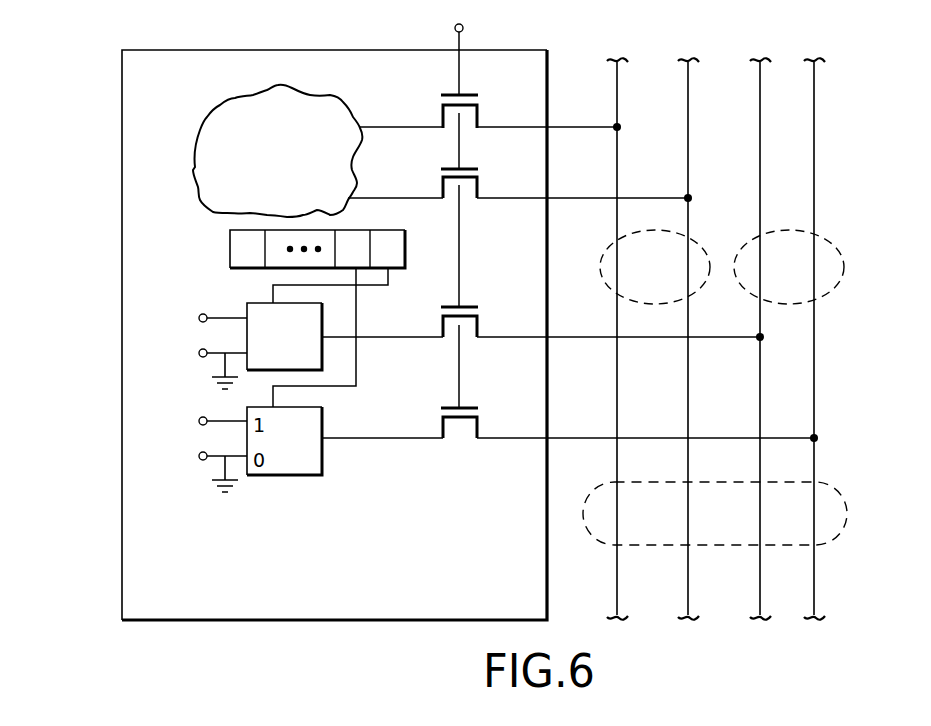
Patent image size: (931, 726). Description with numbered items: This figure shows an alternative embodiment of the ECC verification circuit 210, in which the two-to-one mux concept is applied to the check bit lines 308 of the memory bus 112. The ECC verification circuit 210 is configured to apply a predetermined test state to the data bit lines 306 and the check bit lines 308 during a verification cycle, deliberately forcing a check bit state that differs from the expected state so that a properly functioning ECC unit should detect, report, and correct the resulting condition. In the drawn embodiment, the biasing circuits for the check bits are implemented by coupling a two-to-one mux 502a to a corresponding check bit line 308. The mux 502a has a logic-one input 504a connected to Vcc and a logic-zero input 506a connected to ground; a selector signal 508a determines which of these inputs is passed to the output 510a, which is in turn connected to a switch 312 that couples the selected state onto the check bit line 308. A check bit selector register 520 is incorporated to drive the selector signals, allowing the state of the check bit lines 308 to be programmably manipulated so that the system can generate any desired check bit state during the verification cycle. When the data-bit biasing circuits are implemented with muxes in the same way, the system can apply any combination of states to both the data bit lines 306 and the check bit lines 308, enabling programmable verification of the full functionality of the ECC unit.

The ECC verification circuit 210 is at (201, 585).
The check bit selector register 520 is at (229, 250).
The 2 to 1 mux 502a is at (318, 342).
The "1" input 504a is at (230, 316).
The "0" input 506a is at (213, 345).
The selector signal 508a is at (330, 286).
The output 510a is at (330, 338).
The switch 312 is at (493, 300).
The data bit lines 306 is at (700, 238).
The check bit lines 308 is at (835, 240).
The memory bus 112 is at (843, 492).